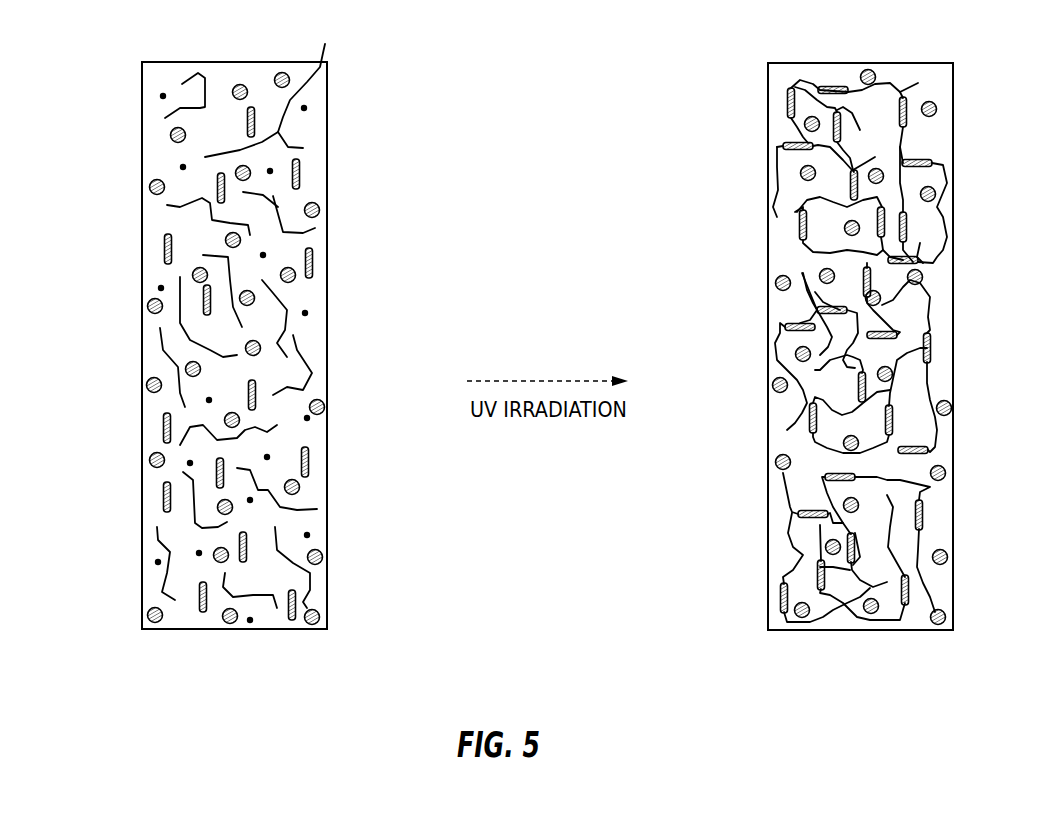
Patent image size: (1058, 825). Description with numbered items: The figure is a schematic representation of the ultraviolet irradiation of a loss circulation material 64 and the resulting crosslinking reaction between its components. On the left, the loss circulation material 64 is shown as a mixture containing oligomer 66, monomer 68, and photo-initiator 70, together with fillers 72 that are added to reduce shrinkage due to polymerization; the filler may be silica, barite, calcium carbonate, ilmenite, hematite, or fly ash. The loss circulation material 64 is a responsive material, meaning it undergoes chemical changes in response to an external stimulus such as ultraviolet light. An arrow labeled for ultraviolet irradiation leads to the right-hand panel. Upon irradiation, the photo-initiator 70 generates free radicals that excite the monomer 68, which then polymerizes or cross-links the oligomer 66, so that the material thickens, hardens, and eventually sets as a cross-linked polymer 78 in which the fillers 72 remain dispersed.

The loss circulation material 64 is at (122, 100).
The oligomer 66 is at (273, 87).
The monomer 68 is at (165, 249).
The photo-initiator 70 is at (308, 314).
The filler 72 is at (241, 84).
The cross-linked polymer 78 is at (757, 102).